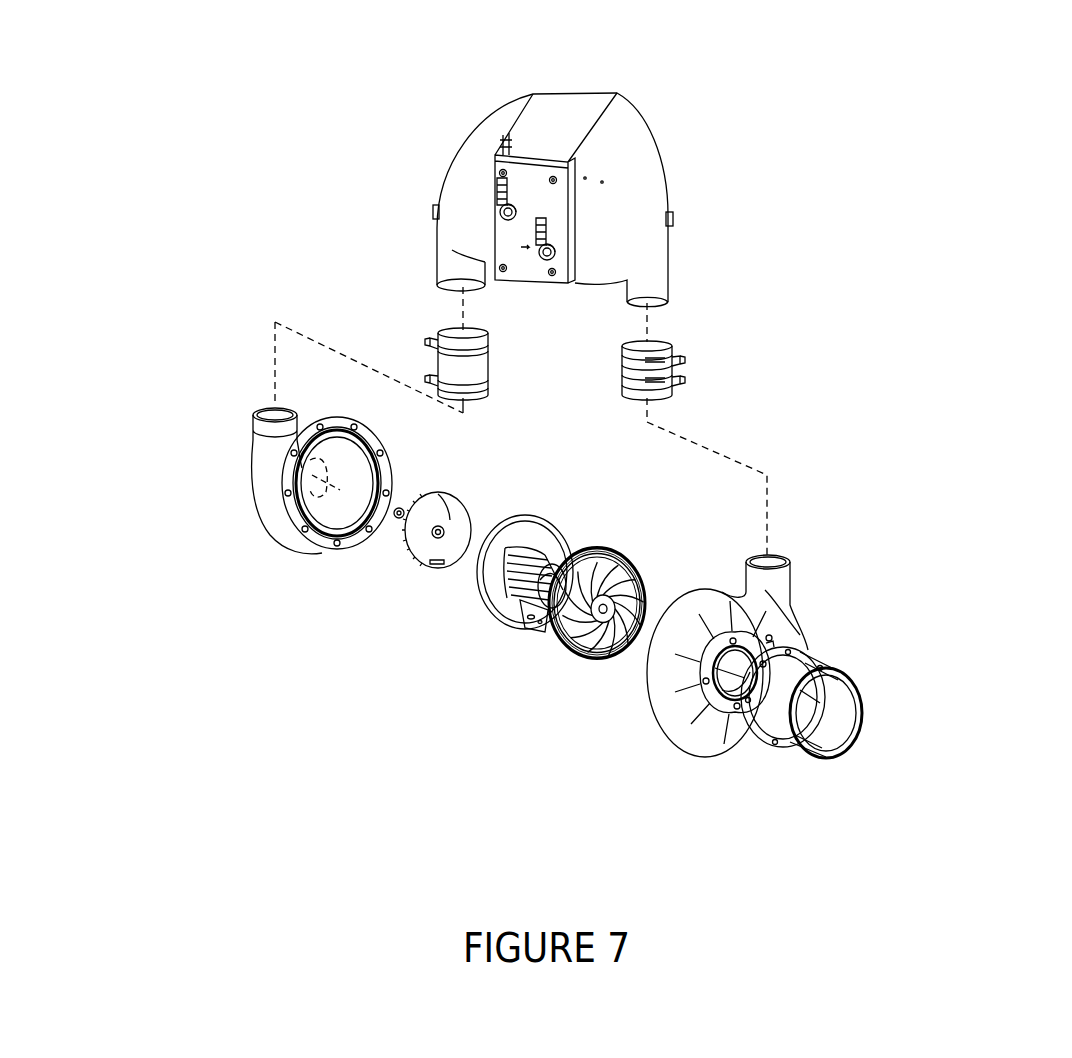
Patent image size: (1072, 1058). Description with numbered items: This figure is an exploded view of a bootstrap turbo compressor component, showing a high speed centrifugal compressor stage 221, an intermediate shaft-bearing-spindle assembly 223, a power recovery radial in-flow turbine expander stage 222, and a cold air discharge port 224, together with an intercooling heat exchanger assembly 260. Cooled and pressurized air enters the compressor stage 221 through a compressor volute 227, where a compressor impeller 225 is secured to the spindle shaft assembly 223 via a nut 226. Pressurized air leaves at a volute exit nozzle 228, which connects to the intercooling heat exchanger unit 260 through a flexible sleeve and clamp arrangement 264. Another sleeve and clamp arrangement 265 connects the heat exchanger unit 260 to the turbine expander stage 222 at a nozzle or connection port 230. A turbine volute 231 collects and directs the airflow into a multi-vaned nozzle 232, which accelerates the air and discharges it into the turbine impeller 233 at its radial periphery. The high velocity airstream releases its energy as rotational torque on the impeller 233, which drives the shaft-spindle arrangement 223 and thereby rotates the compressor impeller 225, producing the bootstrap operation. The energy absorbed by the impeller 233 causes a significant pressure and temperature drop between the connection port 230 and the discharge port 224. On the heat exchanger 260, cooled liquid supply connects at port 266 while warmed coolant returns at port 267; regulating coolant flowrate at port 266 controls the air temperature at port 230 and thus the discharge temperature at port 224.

The centrifugal compressor stage 221 is at (537, 598).
The turbine expander stage 222 is at (785, 663).
The shaft-bearing-spindle assembly 223 is at (478, 640).
The cold air discharge port 224 is at (874, 735).
The compressor impeller 225 is at (391, 569).
The nut 226 is at (321, 564).
The compressor volute 227 is at (276, 490).
The volute exit nozzle 228 is at (213, 384).
The connection port 230 is at (833, 554).
The turbine volute 231 is at (734, 727).
The multi-vaned nozzle 232 is at (565, 654).
The turbine impeller 233 is at (588, 682).
The intercooling heat exchanger assembly 260 is at (576, 187).
The flexible sleeve and clamp arrangement 264 is at (390, 316).
The sleeve and clamp arrangement 265 is at (721, 339).
The cooled liquid supply port 266 is at (587, 277).
The warmed coolant return port 267 is at (424, 173).